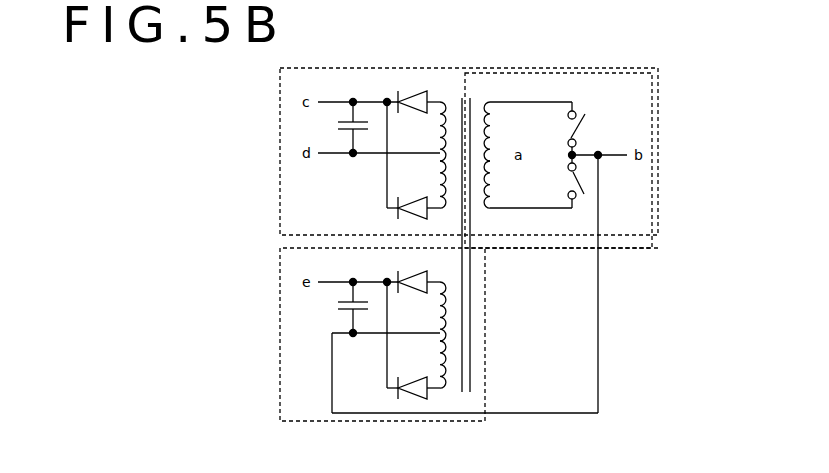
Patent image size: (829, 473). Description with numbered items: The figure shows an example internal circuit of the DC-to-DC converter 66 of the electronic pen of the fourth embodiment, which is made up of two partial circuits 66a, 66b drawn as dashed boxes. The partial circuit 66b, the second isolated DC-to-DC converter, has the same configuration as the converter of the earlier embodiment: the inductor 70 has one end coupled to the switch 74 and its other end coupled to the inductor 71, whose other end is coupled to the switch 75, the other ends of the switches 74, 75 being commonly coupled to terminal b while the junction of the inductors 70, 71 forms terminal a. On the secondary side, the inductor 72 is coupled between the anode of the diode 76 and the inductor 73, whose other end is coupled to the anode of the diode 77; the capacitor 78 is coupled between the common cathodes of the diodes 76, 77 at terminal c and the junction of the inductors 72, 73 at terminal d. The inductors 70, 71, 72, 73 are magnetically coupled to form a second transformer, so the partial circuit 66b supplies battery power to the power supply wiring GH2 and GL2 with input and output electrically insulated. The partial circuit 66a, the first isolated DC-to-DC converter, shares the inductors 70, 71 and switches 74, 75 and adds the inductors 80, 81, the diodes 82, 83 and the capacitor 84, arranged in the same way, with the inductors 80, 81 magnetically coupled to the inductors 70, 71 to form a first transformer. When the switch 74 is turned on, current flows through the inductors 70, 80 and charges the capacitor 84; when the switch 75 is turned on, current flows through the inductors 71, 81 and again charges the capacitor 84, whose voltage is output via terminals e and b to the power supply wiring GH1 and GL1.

The DC-to-DC converter 66 is at (527, 73).
The partial circuit 66a is at (280, 335).
The partial circuit 66b is at (280, 154).
The inductor 70 is at (495, 128).
The inductor 71 is at (495, 183).
The inductor 72 is at (438, 126).
The inductor 73 is at (438, 179).
The switch 74 is at (580, 127).
The switch 75 is at (580, 183).
The diode 76 is at (392, 98).
The diode 77 is at (392, 209).
The capacitor 78 is at (338, 127).
The inductor 80 is at (438, 303).
The inductor 81 is at (438, 356).
The diode 82 is at (392, 278).
The diode 83 is at (392, 389).
The capacitor 84 is at (338, 304).